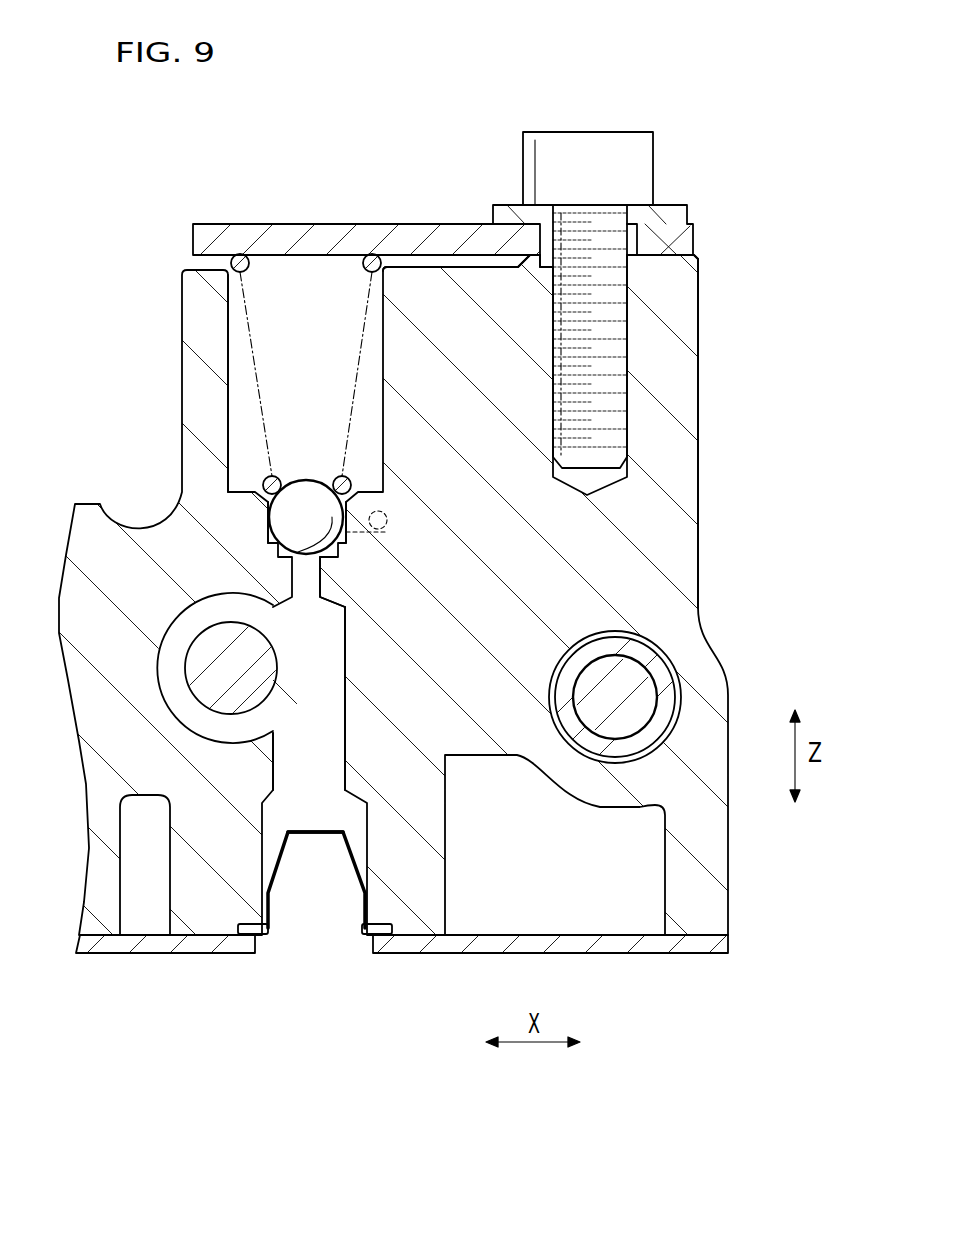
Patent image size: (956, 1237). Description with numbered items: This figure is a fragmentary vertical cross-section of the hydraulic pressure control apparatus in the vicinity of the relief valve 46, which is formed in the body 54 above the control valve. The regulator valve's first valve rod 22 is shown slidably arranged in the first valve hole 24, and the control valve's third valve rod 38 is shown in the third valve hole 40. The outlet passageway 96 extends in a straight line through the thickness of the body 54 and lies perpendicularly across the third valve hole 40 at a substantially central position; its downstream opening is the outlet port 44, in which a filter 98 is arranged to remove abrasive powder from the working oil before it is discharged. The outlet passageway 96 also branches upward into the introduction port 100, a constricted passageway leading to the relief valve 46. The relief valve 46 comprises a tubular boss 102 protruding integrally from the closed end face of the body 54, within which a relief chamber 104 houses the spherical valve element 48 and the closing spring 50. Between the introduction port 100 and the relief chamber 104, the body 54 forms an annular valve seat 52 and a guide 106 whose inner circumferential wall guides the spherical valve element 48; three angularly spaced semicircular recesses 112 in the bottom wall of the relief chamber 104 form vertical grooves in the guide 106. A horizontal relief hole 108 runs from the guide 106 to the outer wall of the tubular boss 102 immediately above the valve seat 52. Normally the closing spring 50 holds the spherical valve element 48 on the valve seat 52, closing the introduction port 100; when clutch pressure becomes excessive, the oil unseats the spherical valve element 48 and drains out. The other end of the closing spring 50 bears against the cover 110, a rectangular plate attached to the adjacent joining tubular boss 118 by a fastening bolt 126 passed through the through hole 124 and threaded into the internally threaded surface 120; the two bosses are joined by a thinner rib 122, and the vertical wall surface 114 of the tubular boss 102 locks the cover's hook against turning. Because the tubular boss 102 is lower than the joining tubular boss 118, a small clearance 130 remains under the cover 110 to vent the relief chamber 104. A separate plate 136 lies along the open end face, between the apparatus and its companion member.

The first valve rod 22 is at (612, 688).
The first valve hole 24 is at (641, 642).
The third valve rod 38 is at (218, 640).
The third valve hole 40 is at (170, 672).
The outlet port 44 is at (365, 848).
The relief valve 46 is at (166, 296).
The spherical valve element 48 is at (303, 488).
The closing spring 50 is at (257, 363).
The valve seat 52 is at (290, 548).
The body 54 is at (678, 553).
The outlet passageway 96 is at (340, 660).
The filter 98 is at (308, 830).
The introduction port 100 is at (316, 590).
The tubular boss 102 is at (195, 374).
The relief chamber 104 is at (230, 436).
The guide 106 is at (278, 530).
The relief hole 108 is at (388, 524).
The cover 110 is at (449, 222).
The recesses 112 is at (263, 483).
The vertical wall surface 114 is at (700, 293).
The joining tubular boss 118 is at (670, 392).
The internally threaded surface 120 is at (608, 414).
The rib 122 is at (410, 288).
The through hole 124 is at (627, 243).
The fastening bolt 126 is at (575, 152).
The clearance 130 is at (205, 262).
The separate plate 136 is at (155, 945).